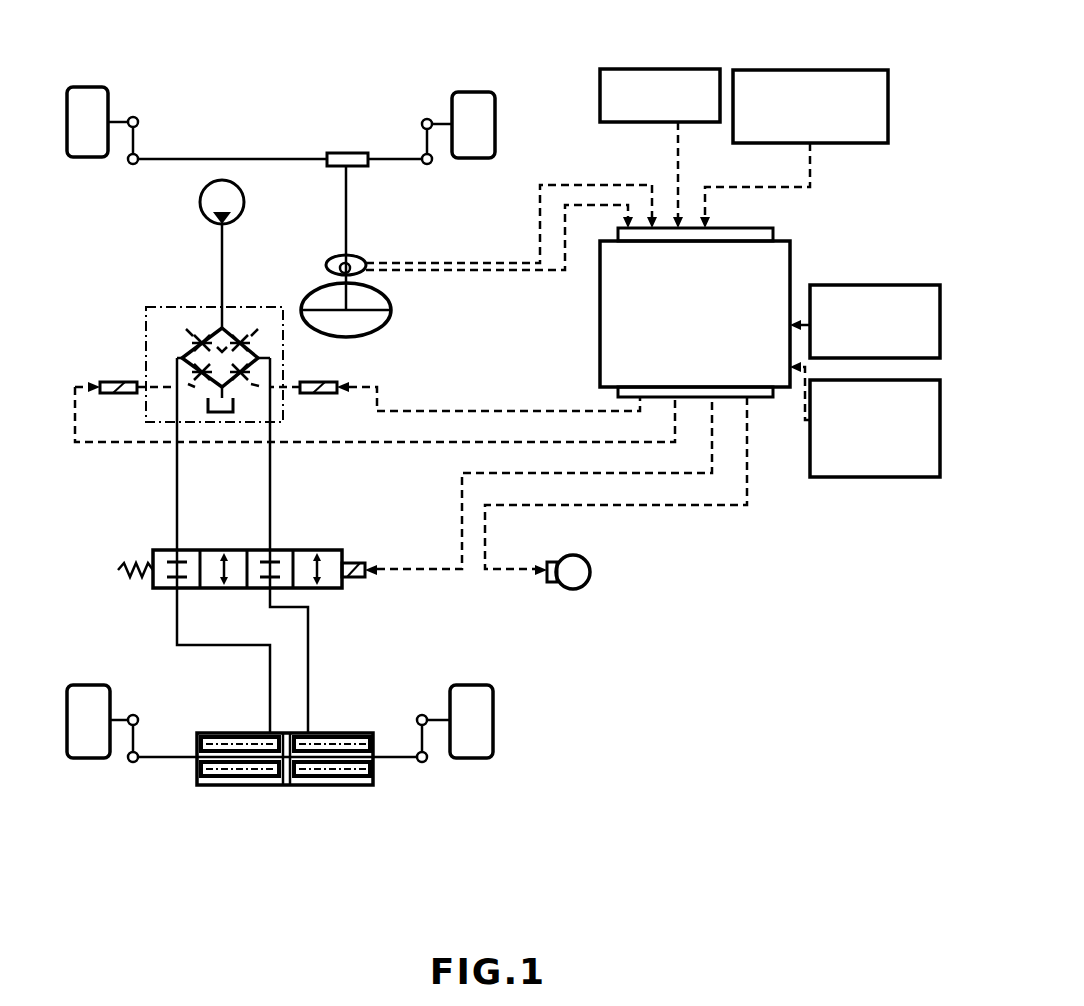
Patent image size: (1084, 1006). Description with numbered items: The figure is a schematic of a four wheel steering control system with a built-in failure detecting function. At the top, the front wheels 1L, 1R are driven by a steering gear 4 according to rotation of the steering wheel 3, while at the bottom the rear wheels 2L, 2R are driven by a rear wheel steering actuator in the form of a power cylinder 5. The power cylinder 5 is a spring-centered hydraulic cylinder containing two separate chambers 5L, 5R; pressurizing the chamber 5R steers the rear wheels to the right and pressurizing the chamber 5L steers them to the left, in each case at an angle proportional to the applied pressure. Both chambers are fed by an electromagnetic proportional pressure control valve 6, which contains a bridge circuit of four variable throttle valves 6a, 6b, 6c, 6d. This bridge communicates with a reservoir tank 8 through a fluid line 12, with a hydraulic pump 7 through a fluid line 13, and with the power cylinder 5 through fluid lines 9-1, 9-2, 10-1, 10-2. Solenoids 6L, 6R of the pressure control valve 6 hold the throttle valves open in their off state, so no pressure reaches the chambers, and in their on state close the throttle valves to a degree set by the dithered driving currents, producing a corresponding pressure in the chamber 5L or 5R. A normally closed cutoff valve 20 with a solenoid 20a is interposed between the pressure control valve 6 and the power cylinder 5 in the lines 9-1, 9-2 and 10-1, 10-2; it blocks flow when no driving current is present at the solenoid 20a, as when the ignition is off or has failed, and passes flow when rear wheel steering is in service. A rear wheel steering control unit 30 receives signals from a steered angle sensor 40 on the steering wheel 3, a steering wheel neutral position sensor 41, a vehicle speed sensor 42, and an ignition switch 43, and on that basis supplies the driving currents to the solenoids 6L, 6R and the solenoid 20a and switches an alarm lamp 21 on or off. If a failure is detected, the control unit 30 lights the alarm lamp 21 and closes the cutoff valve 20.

The left front wheel 1L is at (98, 87).
The right front wheel 1R is at (473, 90).
The left rear wheel 2L is at (87, 760).
The right rear wheel 2R is at (468, 760).
The steering wheel 3 is at (391, 310).
The steering gear 4 is at (333, 153).
The rear wheel steering power cylinder 5 is at (277, 760).
The left cylinder chamber 5L is at (243, 738).
The right cylinder chamber 5R is at (335, 738).
The electromagnetic proportional pressure control valve 6 is at (146, 307).
The variable throttle valve 6a is at (202, 340).
The variable throttle valve 6b is at (240, 372).
The variable throttle valve 6c is at (203, 377).
The variable throttle valve 6d is at (242, 340).
The solenoid 6L is at (120, 382).
The solenoid 6R is at (311, 382).
The hydraulic pump 7 is at (199, 202).
The reservoir tank 8 is at (224, 414).
The fluid line 9-1 is at (177, 494).
The fluid line 9-2 is at (177, 628).
The fluid line 10-1 is at (270, 487).
The fluid line 10-2 is at (310, 672).
The fluid line 12 is at (237, 395).
The fluid line 13 is at (223, 258).
The cutoff valve 20 is at (155, 590).
The solenoid 20a is at (360, 580).
The alarm lamp 21 is at (590, 572).
The rear wheel steering control unit 30 is at (800, 267).
The steered angle sensor 40 is at (350, 262).
The steering wheel neutral position sensor 41 is at (333, 262).
The vehicle speed sensor 42 is at (628, 69).
The ignition switch 43 is at (765, 70).